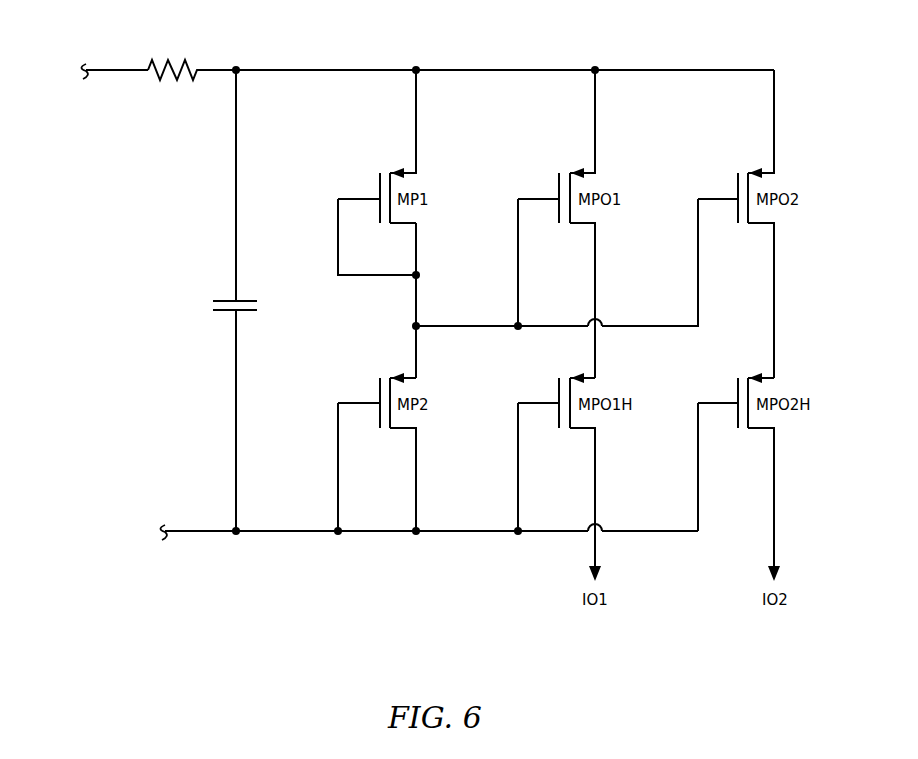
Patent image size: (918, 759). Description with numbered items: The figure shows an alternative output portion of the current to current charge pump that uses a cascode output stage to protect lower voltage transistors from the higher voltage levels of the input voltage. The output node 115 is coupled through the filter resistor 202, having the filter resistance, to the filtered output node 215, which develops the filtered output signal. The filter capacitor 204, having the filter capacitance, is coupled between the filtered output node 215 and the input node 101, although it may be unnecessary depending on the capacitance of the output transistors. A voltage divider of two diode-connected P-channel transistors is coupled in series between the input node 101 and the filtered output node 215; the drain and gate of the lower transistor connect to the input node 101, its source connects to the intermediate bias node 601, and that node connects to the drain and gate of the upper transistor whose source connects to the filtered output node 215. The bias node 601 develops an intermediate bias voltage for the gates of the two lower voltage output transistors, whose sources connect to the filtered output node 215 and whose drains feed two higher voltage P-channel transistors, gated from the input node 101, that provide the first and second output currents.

The input node 101 is at (233, 528).
The output node 115 is at (121, 73).
The filter resistor 202 is at (148, 66).
The filter capacitor 204 is at (243, 299).
The filtered output node 215 is at (246, 66).
The intermediate bias node 601 is at (396, 326).